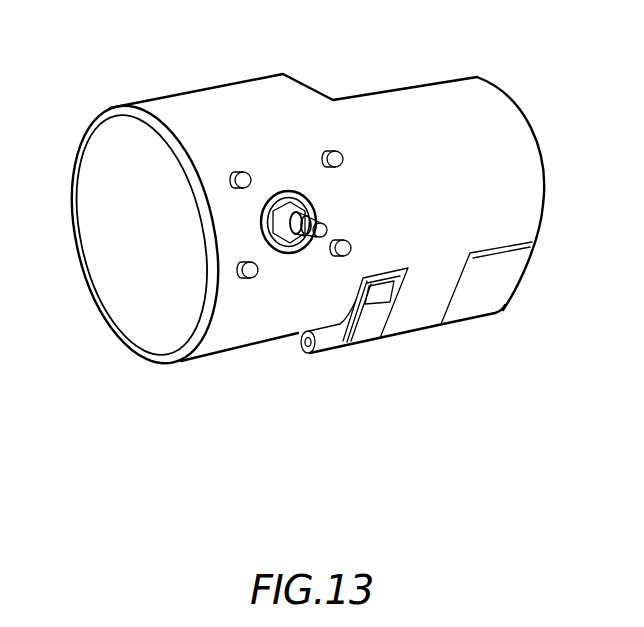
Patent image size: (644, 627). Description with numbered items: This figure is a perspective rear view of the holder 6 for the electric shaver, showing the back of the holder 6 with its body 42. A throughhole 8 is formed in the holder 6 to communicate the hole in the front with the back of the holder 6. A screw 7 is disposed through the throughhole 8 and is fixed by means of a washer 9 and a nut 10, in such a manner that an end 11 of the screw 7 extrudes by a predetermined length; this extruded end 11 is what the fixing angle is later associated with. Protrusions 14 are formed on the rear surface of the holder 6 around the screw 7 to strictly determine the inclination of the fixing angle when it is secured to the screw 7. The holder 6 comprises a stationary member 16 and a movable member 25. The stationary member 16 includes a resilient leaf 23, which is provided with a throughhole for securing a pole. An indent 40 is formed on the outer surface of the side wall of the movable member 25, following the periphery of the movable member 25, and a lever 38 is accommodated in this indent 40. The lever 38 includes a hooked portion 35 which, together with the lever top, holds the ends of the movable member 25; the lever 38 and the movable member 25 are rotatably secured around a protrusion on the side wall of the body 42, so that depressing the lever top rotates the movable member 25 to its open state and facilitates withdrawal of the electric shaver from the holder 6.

The holder 6 is at (213, 326).
The screw 7 is at (323, 217).
The throughhole 8 is at (293, 191).
The washer 9 is at (308, 197).
The nut 10 is at (275, 203).
The end of the screw 11 is at (327, 226).
The protrusions 14 is at (234, 174).
The stationary member 16 is at (502, 170).
The resilient leaf 23 is at (422, 320).
The movable member 25 is at (480, 308).
The hooked portion 35 is at (380, 292).
The lever 38 is at (342, 354).
The indent 40 is at (353, 342).
The body 42 is at (123, 303).